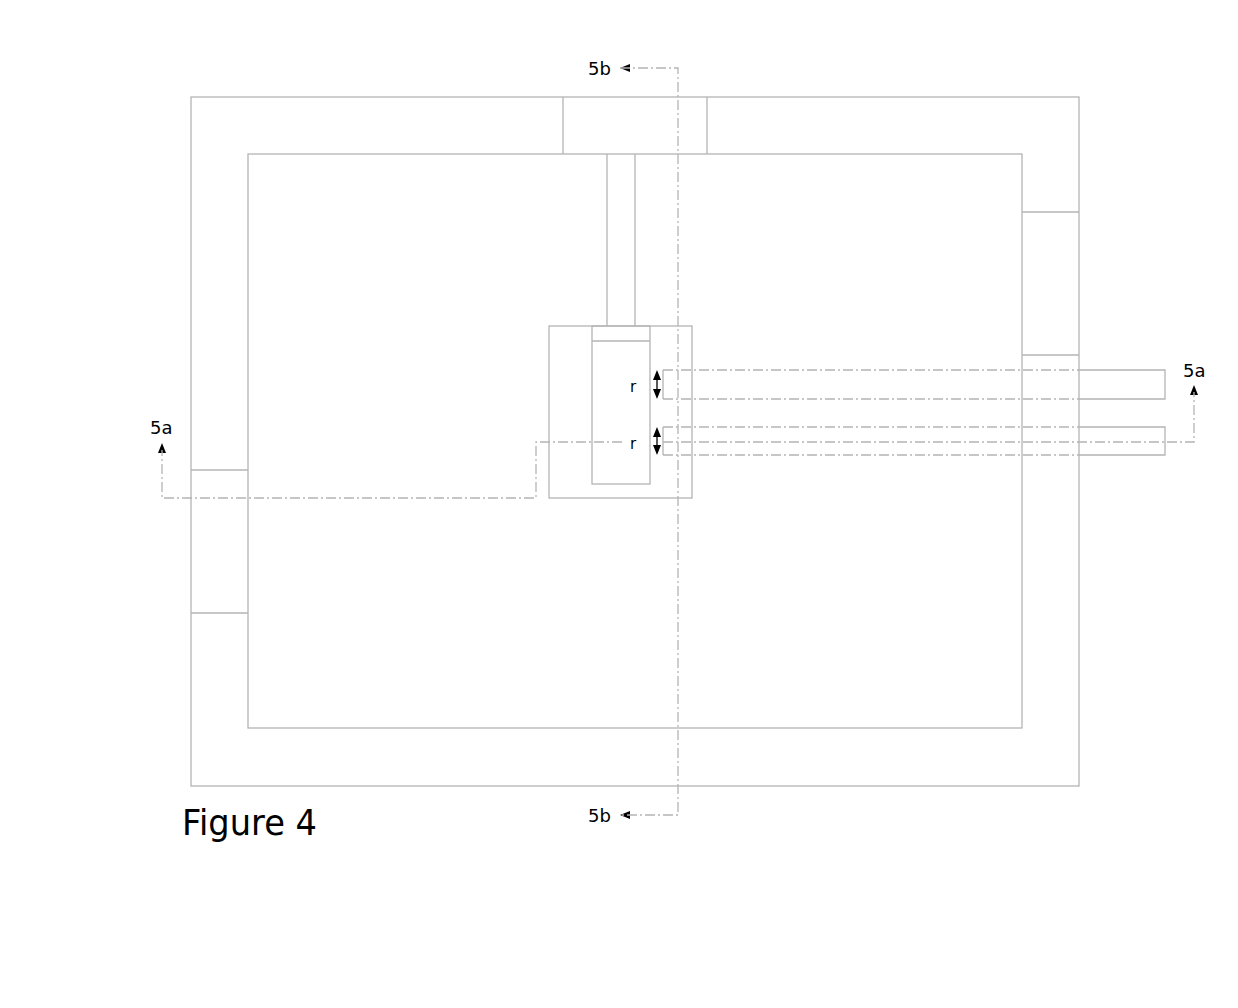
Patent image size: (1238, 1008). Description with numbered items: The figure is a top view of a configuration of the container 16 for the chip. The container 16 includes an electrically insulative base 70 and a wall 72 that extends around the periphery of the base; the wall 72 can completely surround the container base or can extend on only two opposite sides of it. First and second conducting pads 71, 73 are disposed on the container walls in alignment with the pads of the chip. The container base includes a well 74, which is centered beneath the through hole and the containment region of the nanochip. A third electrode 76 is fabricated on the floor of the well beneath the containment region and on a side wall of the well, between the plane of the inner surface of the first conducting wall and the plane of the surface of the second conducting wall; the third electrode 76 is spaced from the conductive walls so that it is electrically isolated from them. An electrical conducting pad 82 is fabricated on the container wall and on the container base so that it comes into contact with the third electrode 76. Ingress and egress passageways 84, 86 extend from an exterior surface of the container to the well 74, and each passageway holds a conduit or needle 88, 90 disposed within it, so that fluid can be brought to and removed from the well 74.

The container 16 is at (1138, 657).
The electrically insulative base 70 is at (993, 183).
The first conducting pad 71 is at (219, 541).
The wall 72 is at (965, 127).
The second conducting pad 73 is at (1050, 240).
The well 74 is at (550, 385).
The third electrode 76 is at (622, 368).
The electrical conducting pad 82 is at (692, 125).
The ingress passageway 84 is at (955, 456).
The egress passageway 86 is at (836, 370).
The conduit or needle 88 is at (1132, 448).
The conduit or needle 90 is at (1105, 383).